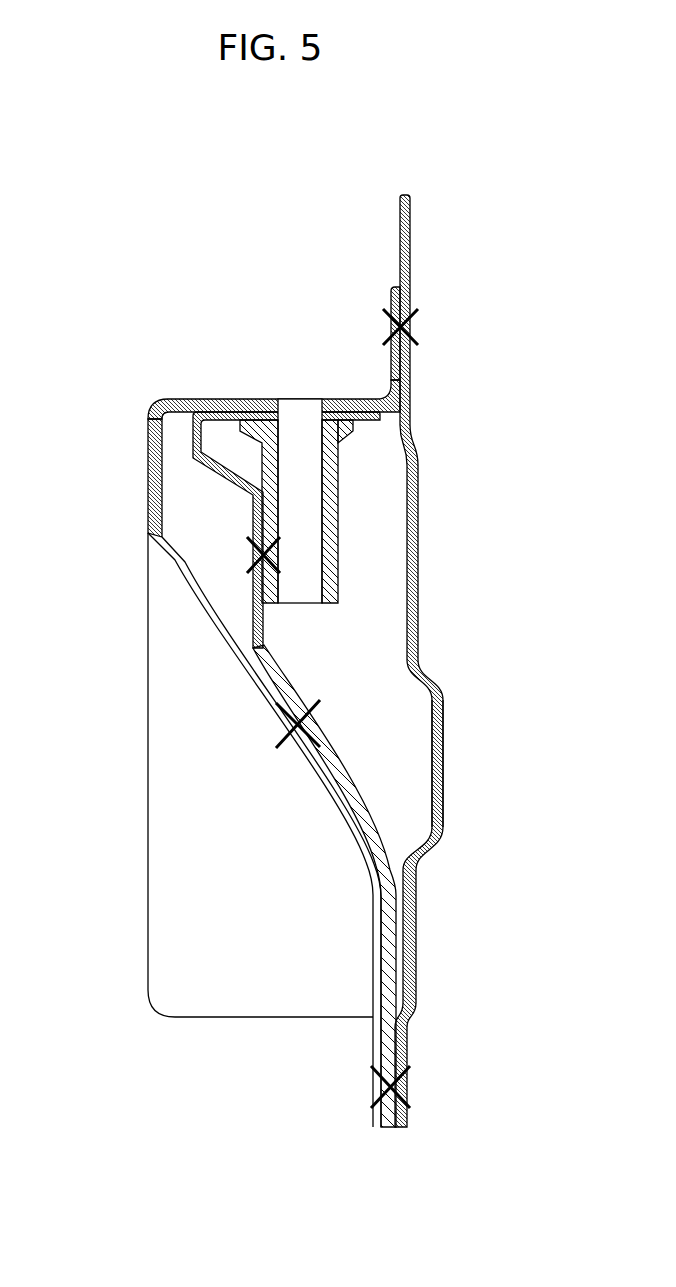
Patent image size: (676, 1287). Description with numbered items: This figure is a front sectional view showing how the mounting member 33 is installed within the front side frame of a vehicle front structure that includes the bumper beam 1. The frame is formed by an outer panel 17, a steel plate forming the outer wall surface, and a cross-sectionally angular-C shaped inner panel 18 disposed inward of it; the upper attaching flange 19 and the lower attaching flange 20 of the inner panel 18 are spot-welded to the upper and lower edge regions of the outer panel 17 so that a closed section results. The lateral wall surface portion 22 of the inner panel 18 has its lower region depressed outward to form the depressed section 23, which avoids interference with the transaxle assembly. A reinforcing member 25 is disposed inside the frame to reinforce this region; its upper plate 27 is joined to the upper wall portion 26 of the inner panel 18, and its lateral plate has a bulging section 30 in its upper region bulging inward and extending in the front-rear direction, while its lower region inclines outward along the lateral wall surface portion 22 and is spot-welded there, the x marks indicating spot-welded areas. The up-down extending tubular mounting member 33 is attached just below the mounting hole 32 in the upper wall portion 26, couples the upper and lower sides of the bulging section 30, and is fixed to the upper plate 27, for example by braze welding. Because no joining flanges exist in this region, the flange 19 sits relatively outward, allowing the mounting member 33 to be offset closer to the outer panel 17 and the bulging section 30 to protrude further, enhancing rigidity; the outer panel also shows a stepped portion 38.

The bumper beam 1 is at (143, 376).
The outer panel 17 is at (430, 626).
The inner panel 18 is at (145, 532).
The attaching flange 19 is at (390, 300).
The attaching flange 20 is at (376, 1050).
The lateral wall surface portion 22 is at (326, 752).
The depressed section 23 is at (190, 717).
The reinforcing member 25 is at (288, 660).
The upper wall portion 26 is at (210, 398).
The upper plate 27 is at (357, 430).
The bulging section 30 is at (191, 456).
The vehicle-component mounting hole 32 is at (308, 398).
The mounting member 33 is at (340, 517).
The bulged portion 38 is at (447, 758).